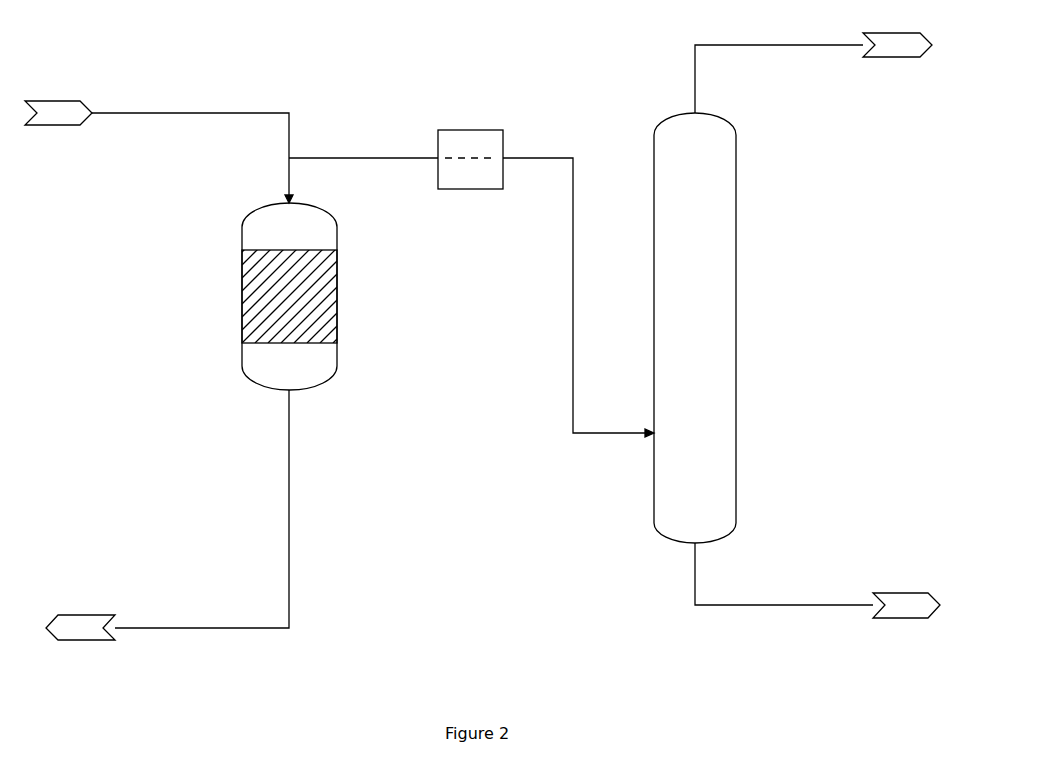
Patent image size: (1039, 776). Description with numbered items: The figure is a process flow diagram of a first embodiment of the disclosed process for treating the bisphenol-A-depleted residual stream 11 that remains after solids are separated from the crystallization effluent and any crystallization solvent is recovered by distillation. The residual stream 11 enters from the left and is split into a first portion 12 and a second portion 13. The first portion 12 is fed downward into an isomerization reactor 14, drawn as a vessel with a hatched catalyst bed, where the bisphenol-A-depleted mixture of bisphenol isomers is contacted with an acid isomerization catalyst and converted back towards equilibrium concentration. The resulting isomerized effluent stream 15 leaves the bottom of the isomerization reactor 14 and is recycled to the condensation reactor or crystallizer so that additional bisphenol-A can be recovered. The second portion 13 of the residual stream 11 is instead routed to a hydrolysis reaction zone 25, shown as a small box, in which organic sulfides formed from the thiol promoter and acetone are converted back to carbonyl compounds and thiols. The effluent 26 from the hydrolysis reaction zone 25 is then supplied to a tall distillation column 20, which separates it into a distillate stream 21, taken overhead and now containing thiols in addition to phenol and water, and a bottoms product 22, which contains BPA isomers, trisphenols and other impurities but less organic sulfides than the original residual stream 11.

The residual stream 11 is at (159, 144).
The first portion 12 is at (289, 283).
The second portion 13 is at (349, 157).
The isomerization reactor 14 is at (304, 295).
The isomerized effluent stream 15 is at (167, 515).
The distillation column 20 is at (711, 328).
The distillate stream 21 is at (813, 65).
The bottoms product 22 is at (817, 580).
The hydrolysis reaction zone 25 is at (477, 128).
The effluent 26 is at (578, 297).